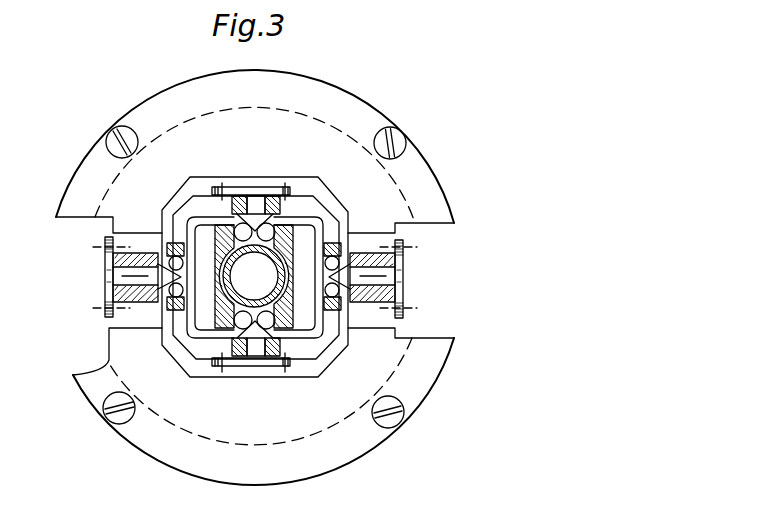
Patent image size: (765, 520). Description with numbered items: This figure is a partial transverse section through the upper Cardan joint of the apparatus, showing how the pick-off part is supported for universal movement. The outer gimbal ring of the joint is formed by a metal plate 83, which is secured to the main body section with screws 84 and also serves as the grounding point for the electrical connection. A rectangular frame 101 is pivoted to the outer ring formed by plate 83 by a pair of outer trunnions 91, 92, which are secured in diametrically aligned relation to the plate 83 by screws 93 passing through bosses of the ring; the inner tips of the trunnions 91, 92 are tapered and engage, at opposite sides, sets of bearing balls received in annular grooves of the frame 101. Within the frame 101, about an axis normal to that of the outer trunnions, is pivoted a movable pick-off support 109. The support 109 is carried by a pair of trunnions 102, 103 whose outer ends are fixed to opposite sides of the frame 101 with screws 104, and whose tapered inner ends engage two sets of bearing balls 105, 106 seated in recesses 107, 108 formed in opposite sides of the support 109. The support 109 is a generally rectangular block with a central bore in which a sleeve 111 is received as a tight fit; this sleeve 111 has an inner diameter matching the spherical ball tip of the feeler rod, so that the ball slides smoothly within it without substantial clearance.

The metal plate 83 is at (202, 466).
The screws 84 is at (115, 130).
The outer trunnion 91 is at (112, 262).
The outer trunnion 92 is at (400, 268).
The screws 93 is at (404, 311).
The rectangular frame 101 is at (317, 207).
The trunnion 102 is at (261, 205).
The trunnion 103 is at (253, 358).
The screws 104 is at (222, 368).
The bearing balls 105 is at (292, 232).
The bearing balls 106 is at (272, 324).
The recess 107 is at (240, 222).
The recess 108 is at (243, 354).
The movable pick-off support 109 is at (225, 312).
The sleeve 111 is at (234, 300).